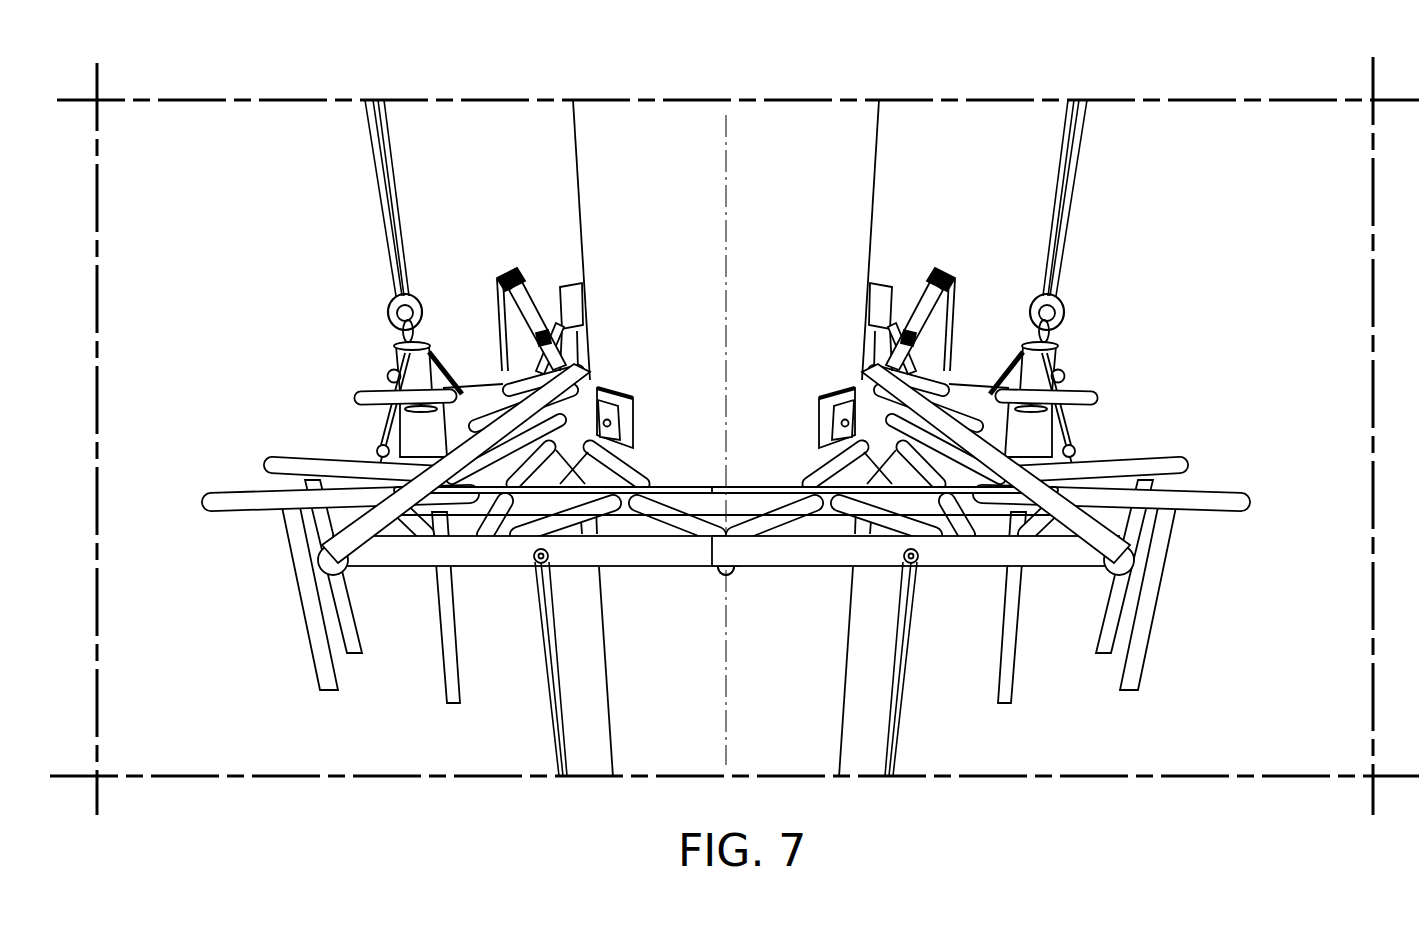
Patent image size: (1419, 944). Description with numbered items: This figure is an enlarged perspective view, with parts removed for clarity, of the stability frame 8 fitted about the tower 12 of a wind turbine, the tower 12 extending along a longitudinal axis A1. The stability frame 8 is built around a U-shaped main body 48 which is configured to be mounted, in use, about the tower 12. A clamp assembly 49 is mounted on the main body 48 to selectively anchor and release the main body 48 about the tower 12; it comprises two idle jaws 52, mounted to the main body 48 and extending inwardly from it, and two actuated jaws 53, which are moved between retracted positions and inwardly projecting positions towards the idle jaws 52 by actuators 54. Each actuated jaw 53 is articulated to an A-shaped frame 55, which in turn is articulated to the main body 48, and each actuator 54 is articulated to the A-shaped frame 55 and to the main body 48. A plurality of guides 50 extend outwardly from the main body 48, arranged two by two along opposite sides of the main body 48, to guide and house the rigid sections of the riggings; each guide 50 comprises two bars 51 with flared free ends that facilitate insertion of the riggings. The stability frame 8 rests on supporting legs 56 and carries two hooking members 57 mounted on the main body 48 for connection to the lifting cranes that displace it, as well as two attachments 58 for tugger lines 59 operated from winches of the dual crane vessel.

The longitudinal axis A1 is at (727, 193).
The stability frame 8 is at (1230, 323).
The tower 12 is at (858, 160).
The U-shaped main body 48 is at (983, 593).
The clamp assembly 49 is at (998, 185).
The guides 50 is at (343, 377).
The bars 51 is at (372, 392).
The idle jaws 52 is at (637, 433).
The actuated jaws 53 is at (572, 288).
The actuators 54 is at (534, 280).
The A-shaped frame 55 is at (472, 318).
The supporting legs 56 is at (362, 656).
The hooking members 57 is at (407, 434).
The attachments 58 is at (537, 567).
The tugger lines 59 is at (557, 706).